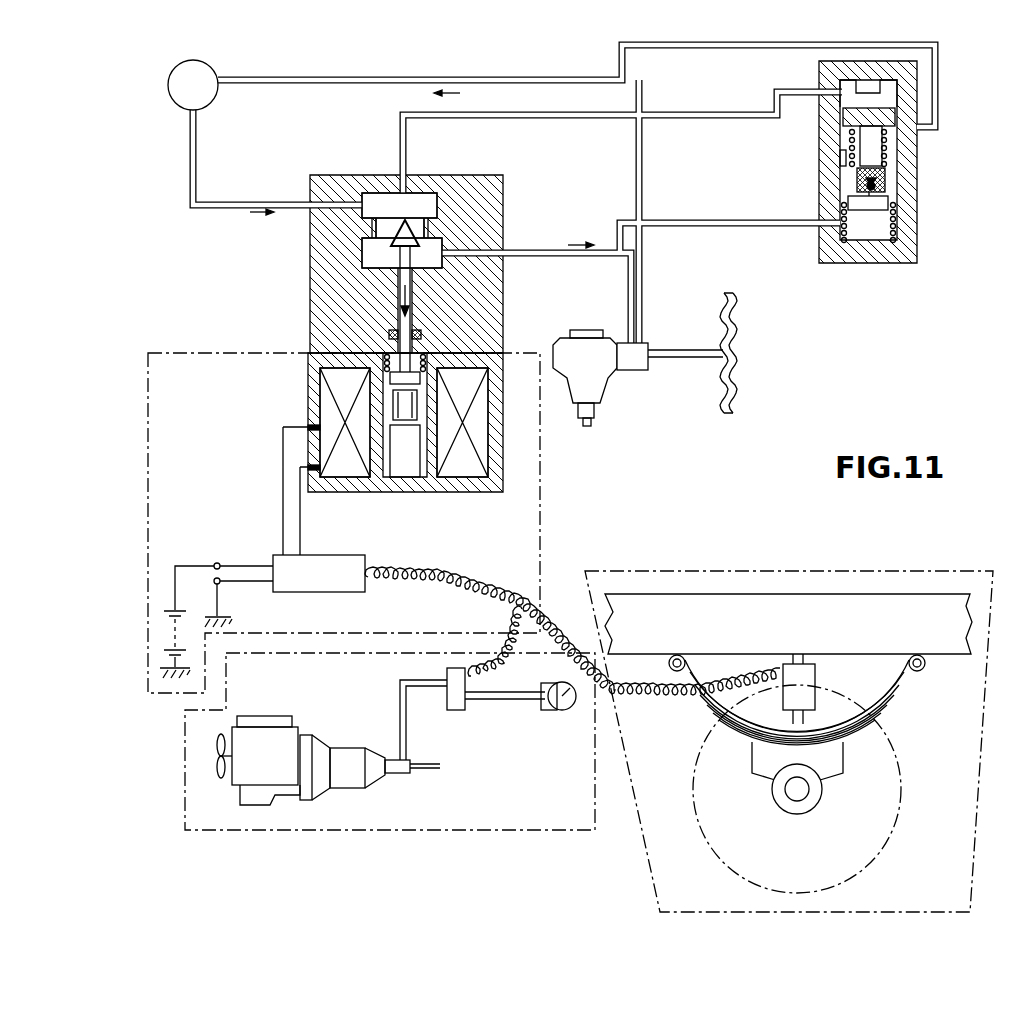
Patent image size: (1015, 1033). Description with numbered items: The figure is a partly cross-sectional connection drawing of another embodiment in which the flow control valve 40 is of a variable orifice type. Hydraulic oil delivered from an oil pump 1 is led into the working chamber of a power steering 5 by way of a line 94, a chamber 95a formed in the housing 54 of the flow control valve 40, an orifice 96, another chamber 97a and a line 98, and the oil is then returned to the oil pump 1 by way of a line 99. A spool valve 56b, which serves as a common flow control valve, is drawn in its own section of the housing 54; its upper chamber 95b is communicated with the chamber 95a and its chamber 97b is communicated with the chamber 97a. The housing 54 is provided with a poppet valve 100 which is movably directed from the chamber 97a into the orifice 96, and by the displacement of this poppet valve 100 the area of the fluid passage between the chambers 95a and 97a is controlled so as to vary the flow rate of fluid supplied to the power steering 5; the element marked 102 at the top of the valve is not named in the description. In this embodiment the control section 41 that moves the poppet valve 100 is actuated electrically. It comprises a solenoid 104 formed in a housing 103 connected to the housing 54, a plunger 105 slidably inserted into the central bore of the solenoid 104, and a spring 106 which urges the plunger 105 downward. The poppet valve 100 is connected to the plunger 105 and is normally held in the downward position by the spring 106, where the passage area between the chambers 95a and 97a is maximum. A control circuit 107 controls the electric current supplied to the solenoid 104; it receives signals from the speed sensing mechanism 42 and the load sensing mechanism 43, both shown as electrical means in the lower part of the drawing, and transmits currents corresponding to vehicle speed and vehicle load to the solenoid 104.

The oil pump 1 is at (175, 104).
The power steering 5 is at (641, 358).
The flow control valve 40 is at (426, 332).
The control section 41 is at (311, 523).
The speed sensing mechanism 42 is at (395, 832).
The load sensing mechanism 43 is at (638, 838).
The housing 54 is at (505, 200).
The spool valve 56b is at (896, 190).
The line 94 is at (197, 157).
The chamber 95a is at (393, 200).
The upper chamber 95b is at (851, 101).
The orifice 96 is at (420, 215).
The chamber 97a is at (362, 250).
The chamber 97b is at (868, 232).
The line 98 is at (588, 257).
The line 99 is at (578, 77).
The poppet valve 100 is at (398, 320).
The valve port 102 is at (392, 208).
The housing 103 is at (505, 422).
The solenoid 104 is at (486, 446).
The plunger 105 is at (400, 470).
The spring 106 is at (428, 356).
The control circuit 107 is at (345, 558).